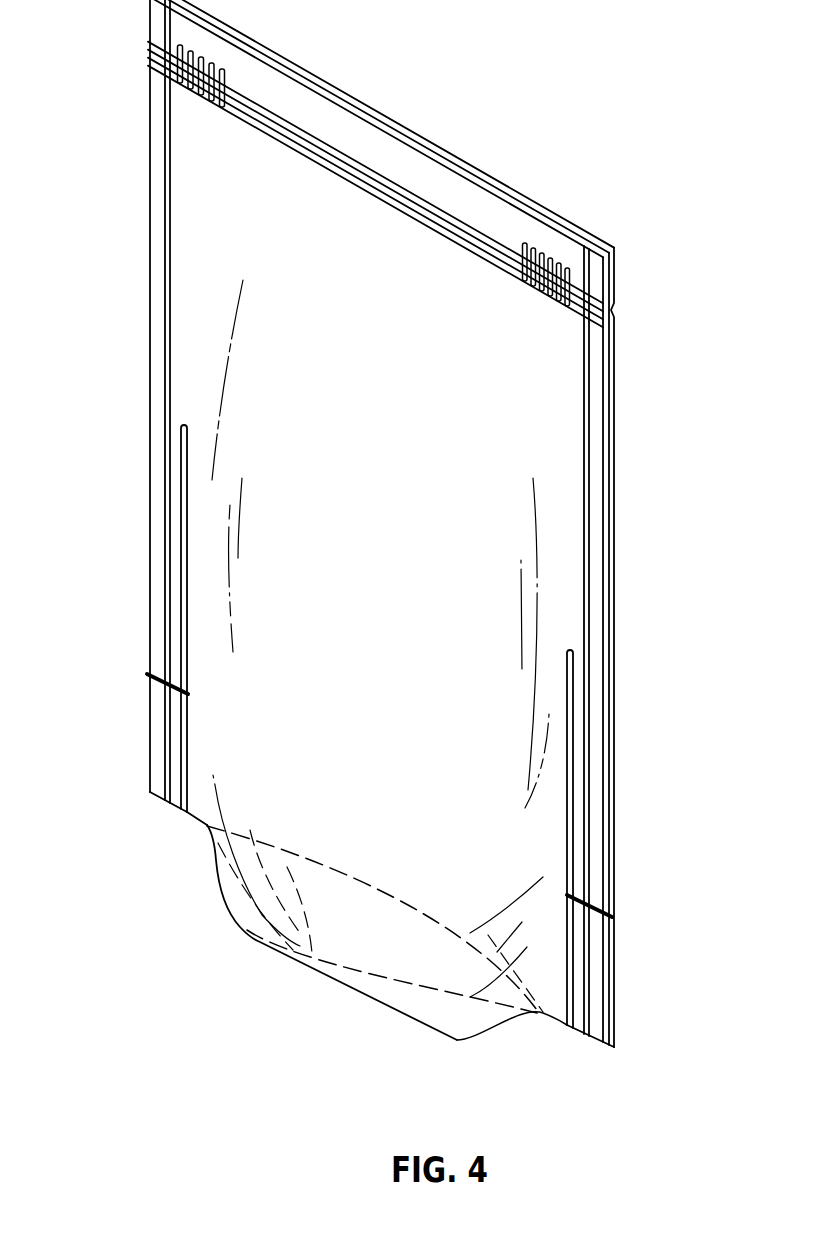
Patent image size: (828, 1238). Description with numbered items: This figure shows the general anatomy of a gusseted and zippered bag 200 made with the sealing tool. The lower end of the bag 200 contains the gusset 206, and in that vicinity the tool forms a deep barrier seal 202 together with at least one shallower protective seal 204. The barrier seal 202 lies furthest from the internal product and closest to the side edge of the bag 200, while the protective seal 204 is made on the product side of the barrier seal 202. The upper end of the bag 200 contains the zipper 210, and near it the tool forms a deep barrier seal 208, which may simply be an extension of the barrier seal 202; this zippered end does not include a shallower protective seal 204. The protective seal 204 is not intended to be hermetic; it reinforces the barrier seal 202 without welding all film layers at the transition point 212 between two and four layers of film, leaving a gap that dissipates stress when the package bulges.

The bag 200 is at (370, 523).
The barrier seal 202 is at (585, 777).
The protective seal 204 is at (567, 852).
The gusset 206 is at (310, 967).
The barrier seal 208 is at (167, 297).
The zipper 210 is at (462, 228).
The transition point 212 is at (150, 677).